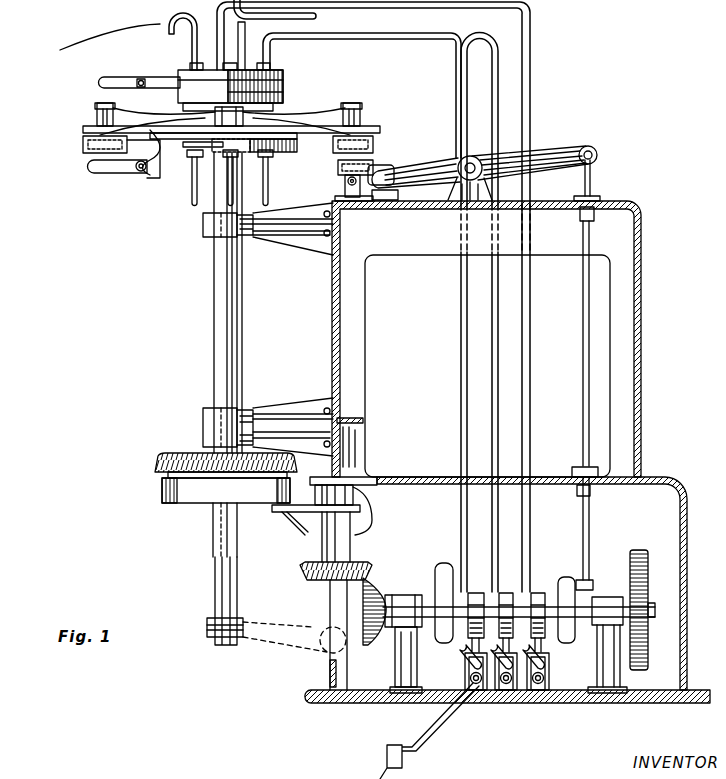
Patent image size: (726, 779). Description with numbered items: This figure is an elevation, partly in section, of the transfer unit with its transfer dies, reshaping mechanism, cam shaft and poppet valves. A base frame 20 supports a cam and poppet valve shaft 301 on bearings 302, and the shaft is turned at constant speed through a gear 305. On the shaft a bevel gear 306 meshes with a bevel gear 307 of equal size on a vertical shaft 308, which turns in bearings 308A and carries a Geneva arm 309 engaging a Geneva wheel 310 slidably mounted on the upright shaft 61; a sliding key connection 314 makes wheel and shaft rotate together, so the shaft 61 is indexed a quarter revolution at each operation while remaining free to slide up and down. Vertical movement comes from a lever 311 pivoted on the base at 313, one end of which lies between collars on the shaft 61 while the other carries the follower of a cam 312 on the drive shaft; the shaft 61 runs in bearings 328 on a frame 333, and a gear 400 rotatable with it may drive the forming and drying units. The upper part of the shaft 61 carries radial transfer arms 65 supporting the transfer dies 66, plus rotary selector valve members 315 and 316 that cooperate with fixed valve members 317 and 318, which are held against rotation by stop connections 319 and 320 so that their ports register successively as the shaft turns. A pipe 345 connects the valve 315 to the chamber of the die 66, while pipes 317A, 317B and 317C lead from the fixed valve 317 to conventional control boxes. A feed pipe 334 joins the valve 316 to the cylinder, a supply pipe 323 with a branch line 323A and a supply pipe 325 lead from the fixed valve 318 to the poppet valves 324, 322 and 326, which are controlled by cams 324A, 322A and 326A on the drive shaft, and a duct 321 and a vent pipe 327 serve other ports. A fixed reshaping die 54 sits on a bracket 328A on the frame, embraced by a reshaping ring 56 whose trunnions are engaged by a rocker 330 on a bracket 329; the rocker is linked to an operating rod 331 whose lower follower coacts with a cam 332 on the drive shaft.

The base frame 20 is at (630, 703).
The fixed reshaping die 54 is at (378, 163).
The reshaping ring 56 is at (415, 156).
The shaft 61 is at (215, 576).
The radial transfer arms 65 is at (85, 129).
The transfer die 66 is at (40, 152).
The cam and poppet valve shaft 301 is at (653, 613).
The bearings 302 is at (627, 688).
The gear 305 is at (648, 568).
The bevel gear 306 is at (377, 650).
The bevel gear 307 is at (305, 568).
The vertical shaft 308 is at (332, 598).
The bearings 308A is at (360, 487).
The Geneva arm 309 is at (287, 512).
The Geneva wheel 310 is at (163, 501).
The lever 311 is at (268, 648).
The cam 312 is at (448, 648).
The pivot 313 is at (327, 648).
The sliding key connection 314 is at (220, 536).
The rotary selector valve member 315 is at (233, 133).
The rotary selector valve member 316 is at (282, 98).
The fixed valve member 317 is at (183, 140).
The pipe 317A is at (190, 187).
The pipe 317B is at (232, 187).
The pipe 317C is at (267, 197).
The fixed valve member 318 is at (197, 82).
The stop connection 319 is at (92, 166).
The stop connection 320 is at (100, 83).
The duct 321 is at (320, 16).
The poppet valve 322 is at (508, 692).
The cam 322A is at (507, 593).
The supply pipe 323 is at (458, 72).
The branch line 323A is at (498, 88).
The poppet valve 324 is at (478, 692).
The cam 324A is at (477, 593).
The supply pipe 325 is at (530, 48).
The poppet valve 326 is at (546, 692).
The cam 326A is at (539, 593).
The pipe 327 is at (88, 41).
The bearings 328 is at (212, 410).
The bracket 328A is at (380, 196).
The bracket 329 is at (468, 158).
The rocker 330 is at (443, 160).
The operating rod 331 is at (588, 355).
The cam 332 is at (567, 645).
The frame 333 is at (642, 302).
The feed pipe 334 is at (283, 110).
The pipe 345 is at (143, 147).
The gear 400 is at (160, 462).